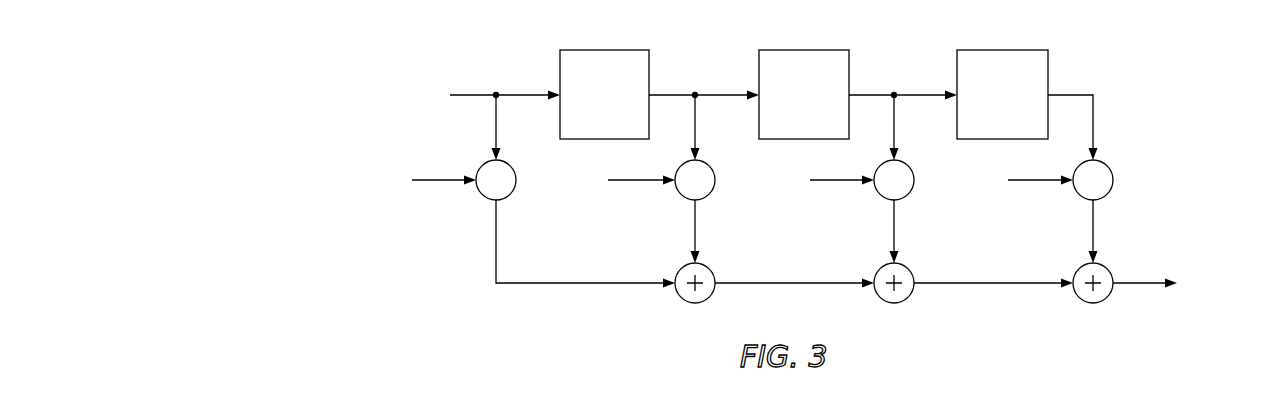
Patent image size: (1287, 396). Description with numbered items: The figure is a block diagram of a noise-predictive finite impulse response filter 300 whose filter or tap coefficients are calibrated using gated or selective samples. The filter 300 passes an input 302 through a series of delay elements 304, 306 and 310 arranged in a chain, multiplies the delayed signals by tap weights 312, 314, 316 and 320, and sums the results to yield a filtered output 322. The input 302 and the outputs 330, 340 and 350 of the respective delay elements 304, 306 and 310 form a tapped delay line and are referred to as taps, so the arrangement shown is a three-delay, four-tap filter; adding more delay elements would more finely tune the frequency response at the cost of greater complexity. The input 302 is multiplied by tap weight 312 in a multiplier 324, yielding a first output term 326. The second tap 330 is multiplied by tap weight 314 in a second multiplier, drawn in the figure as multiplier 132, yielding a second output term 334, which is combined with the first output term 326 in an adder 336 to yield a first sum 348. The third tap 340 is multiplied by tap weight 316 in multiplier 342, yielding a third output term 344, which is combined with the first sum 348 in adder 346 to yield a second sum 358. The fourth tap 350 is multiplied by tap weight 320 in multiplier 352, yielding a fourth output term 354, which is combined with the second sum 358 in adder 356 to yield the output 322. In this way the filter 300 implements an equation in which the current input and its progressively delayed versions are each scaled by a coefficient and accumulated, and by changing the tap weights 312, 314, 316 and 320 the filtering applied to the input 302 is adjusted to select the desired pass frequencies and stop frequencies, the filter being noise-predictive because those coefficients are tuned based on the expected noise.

The noise-predictive finite impulse response filter 300 is at (1203, 75).
The input 302 is at (460, 98).
The delay element 304 is at (604, 94).
The delay element 306 is at (804, 94).
The delay element 310 is at (1002, 94).
The tap weight 312 is at (418, 186).
The tap weight 314 is at (608, 183).
The tap weight 316 is at (810, 183).
The tap weight 320 is at (1008, 183).
The filtered output 322 is at (1148, 288).
The multiplier 324 is at (510, 196).
The second multiplier 132 is at (680, 196).
The multiplier 342 is at (880, 196).
The multiplier 352 is at (1078, 196).
The first output term 326 is at (574, 286).
The second tap 330 is at (696, 118).
The second output term 334 is at (696, 222).
The adder 336 is at (680, 300).
The third tap 340 is at (895, 118).
The third output term 344 is at (895, 222).
The adder 346 is at (880, 300).
The first sum 348 is at (783, 286).
The fourth tap 350 is at (1094, 118).
The fourth output term 354 is at (1094, 235).
The adder 356 is at (1080, 300).
The second sum 358 is at (983, 286).